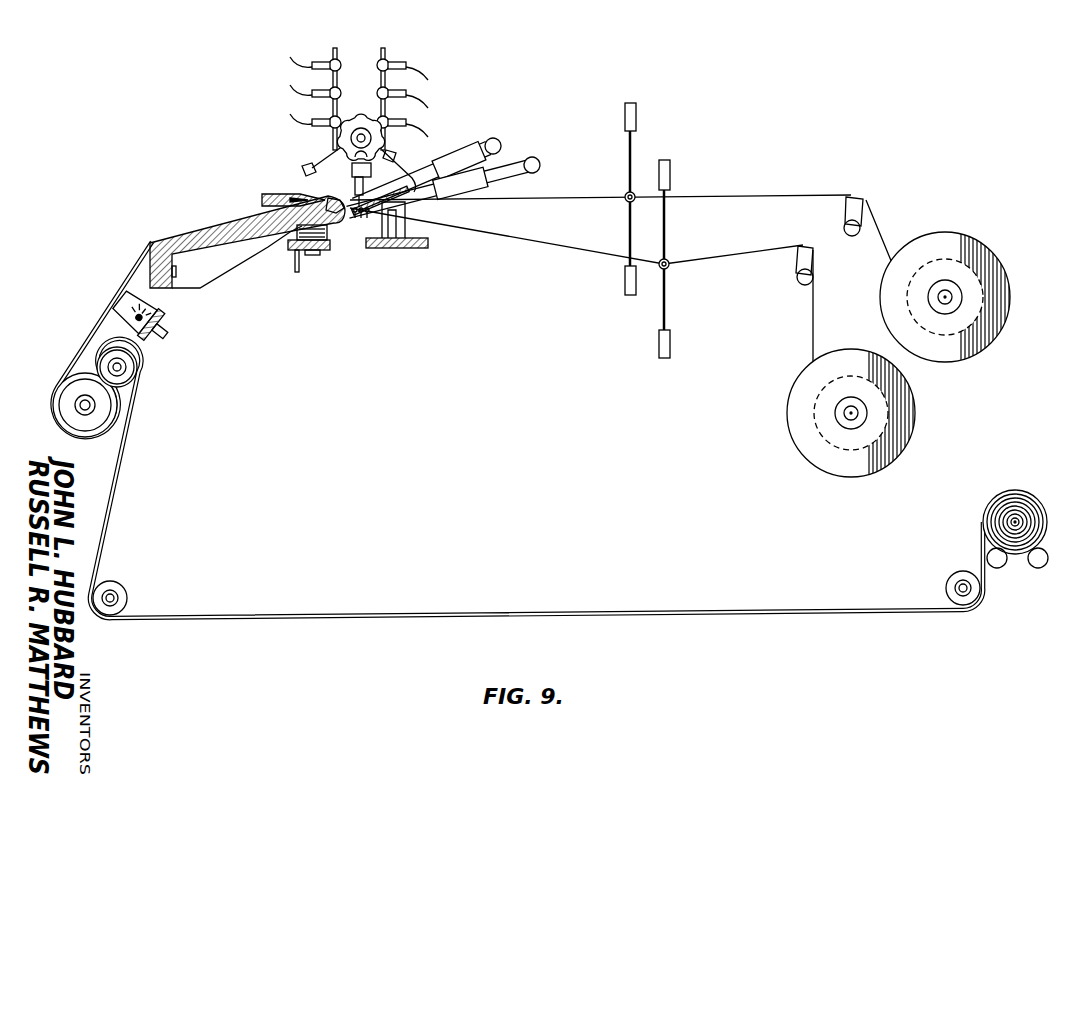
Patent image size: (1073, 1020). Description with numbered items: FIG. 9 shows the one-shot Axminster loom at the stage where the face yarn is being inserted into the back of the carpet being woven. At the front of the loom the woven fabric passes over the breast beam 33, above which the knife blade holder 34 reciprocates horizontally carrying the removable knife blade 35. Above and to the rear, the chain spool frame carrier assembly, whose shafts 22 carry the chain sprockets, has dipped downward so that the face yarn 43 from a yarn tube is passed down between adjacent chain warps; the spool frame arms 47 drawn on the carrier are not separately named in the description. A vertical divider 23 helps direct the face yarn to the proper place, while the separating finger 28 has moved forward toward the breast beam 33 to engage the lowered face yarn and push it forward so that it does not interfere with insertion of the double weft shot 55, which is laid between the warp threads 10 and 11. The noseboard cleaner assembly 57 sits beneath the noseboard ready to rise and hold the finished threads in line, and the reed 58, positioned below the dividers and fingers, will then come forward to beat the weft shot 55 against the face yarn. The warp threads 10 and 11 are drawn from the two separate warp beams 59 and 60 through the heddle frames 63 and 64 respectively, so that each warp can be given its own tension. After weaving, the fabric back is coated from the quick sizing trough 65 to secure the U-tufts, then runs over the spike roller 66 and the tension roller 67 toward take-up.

The warp thread 10 is at (764, 196).
The warp thread 11 is at (744, 251).
The shaft 22 is at (360, 130).
The vertical divider 23 is at (443, 184).
The separating finger 28 is at (418, 180).
The breast beam 33 is at (199, 241).
The knife blade holder 34 is at (268, 195).
The knife blade 35 is at (329, 204).
The face yarn 43 is at (305, 173).
The hook arm 47 is at (422, 82).
The double weft shot 55 is at (366, 214).
The noseboard cleaner assembly 57 is at (338, 238).
The reed 58 is at (404, 242).
The warp beam 59 is at (962, 242).
The warp beam 60 is at (803, 428).
The heddle frame 63 is at (627, 229).
The heddle frame 64 is at (661, 306).
The quick sizing trough 65 is at (165, 322).
The spike roller 66 is at (84, 422).
The tension roller 67 is at (134, 368).